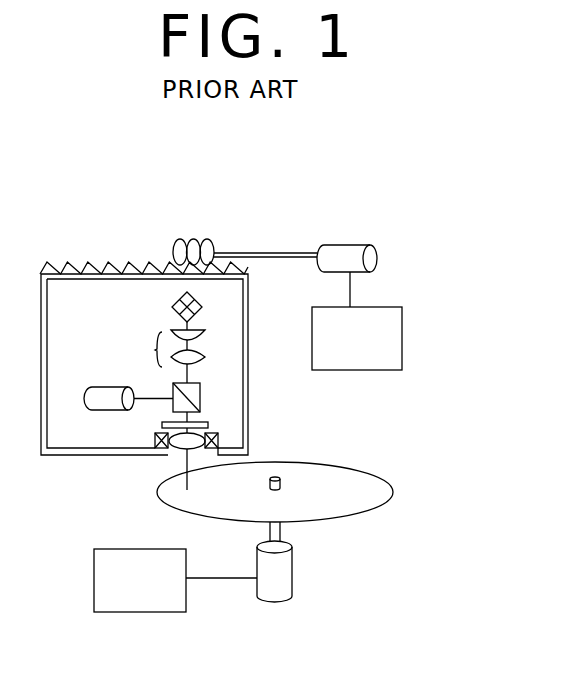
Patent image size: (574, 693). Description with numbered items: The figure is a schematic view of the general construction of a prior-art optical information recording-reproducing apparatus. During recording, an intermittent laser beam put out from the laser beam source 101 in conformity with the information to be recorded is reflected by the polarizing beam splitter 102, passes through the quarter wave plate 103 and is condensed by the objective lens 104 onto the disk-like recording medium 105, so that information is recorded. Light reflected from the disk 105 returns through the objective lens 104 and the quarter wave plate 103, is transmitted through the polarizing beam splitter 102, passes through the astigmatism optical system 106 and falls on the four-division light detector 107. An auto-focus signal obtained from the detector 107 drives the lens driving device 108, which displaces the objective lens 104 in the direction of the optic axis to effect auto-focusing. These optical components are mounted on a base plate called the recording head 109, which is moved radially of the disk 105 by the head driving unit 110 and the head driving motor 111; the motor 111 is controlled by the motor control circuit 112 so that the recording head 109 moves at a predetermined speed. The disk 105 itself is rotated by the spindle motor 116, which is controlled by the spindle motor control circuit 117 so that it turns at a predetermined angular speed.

The laser beam source 101 is at (102, 386).
The polarizing beam splitter 102 is at (204, 383).
The quarter wave plate 103 is at (210, 421).
The objective lens 104 is at (178, 452).
The disk-like recording medium 105 is at (333, 462).
The astigmatism optical system 106 is at (161, 348).
The four-division light detector 107 is at (172, 307).
The lens driving device 108 is at (155, 441).
The recording head 109 is at (48, 455).
The head driving unit 110 is at (177, 240).
The head driving motor 111 is at (341, 245).
The motor control circuit 112 is at (402, 338).
The spindle motor 116 is at (292, 568).
The spindle motor control circuit 117 is at (135, 613).